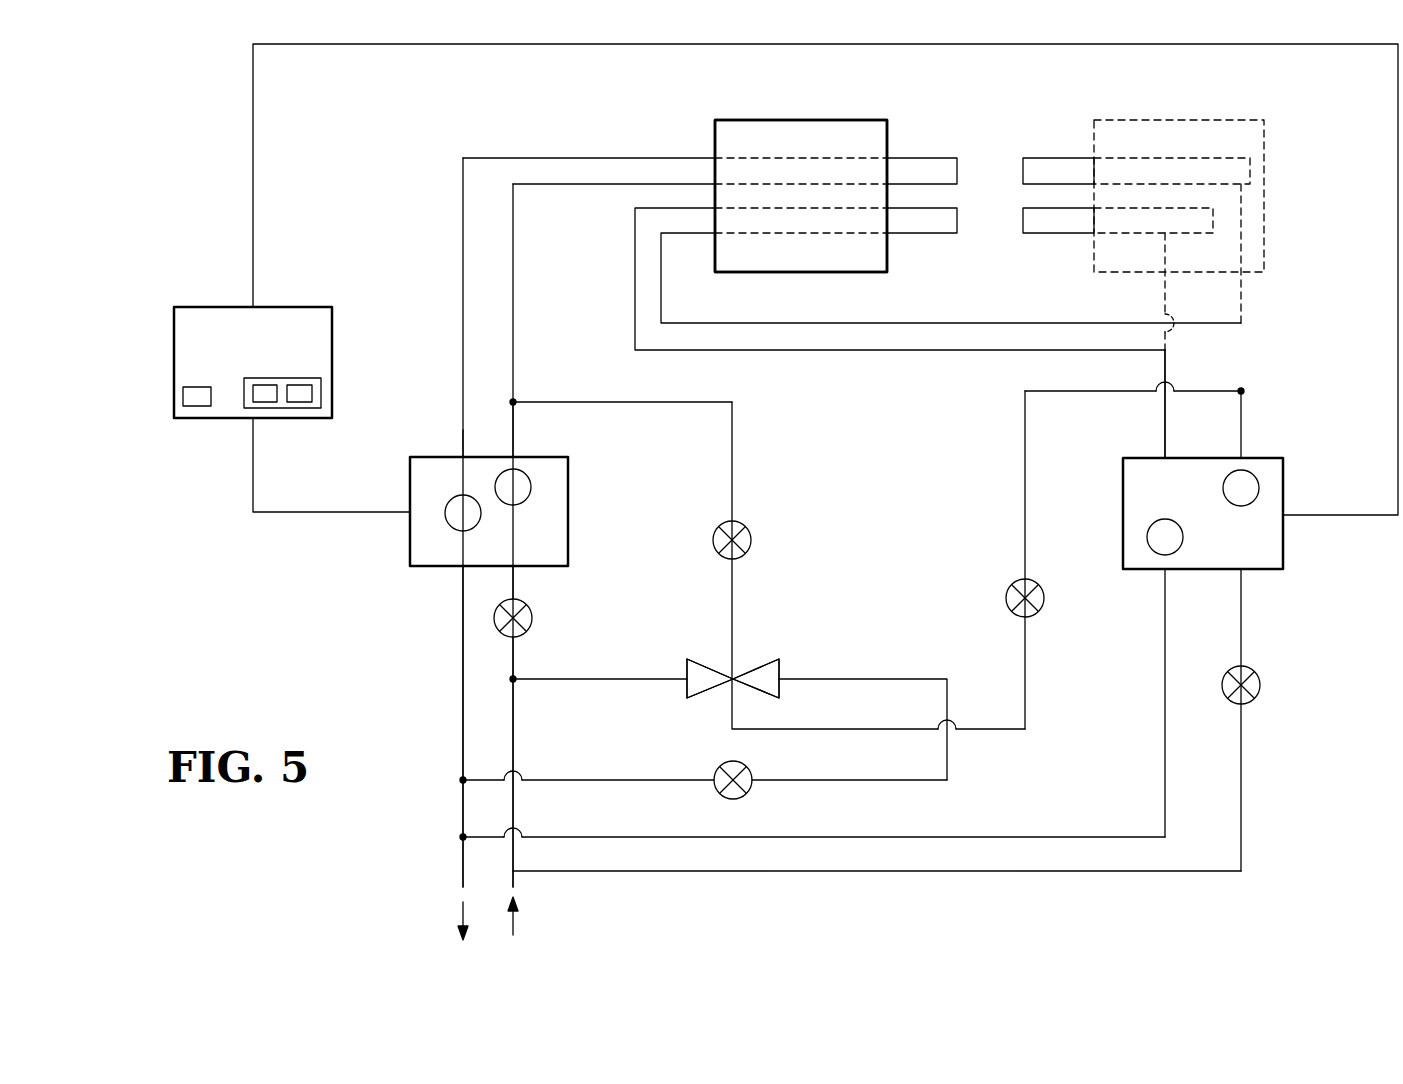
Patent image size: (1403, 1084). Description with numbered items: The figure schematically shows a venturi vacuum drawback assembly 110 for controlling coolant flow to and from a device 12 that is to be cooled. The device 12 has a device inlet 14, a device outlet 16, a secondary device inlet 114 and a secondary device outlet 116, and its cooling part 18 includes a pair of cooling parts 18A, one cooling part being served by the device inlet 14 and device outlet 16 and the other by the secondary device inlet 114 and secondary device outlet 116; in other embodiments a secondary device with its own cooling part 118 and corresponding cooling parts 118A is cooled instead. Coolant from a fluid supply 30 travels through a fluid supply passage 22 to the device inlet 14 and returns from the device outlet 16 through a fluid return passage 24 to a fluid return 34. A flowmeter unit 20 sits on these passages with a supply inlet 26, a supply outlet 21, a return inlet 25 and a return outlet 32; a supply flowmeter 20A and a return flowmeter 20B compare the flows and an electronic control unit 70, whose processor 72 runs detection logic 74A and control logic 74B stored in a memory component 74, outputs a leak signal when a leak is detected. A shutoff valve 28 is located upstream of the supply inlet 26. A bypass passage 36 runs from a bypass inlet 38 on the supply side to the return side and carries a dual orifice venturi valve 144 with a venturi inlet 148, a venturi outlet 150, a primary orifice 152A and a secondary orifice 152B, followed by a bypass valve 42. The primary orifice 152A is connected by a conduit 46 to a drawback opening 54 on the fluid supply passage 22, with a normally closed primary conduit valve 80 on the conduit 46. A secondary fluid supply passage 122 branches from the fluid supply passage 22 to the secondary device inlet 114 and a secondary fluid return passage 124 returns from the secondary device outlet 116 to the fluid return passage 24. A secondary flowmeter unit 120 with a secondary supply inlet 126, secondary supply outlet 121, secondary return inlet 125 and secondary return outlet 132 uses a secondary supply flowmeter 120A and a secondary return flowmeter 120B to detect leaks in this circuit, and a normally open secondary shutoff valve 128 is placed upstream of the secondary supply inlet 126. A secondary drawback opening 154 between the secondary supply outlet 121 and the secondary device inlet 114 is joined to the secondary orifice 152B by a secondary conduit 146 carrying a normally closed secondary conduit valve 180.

The venturi vacuum drawback assembly 110 is at (208, 104).
The electronic control unit 70 is at (174, 325).
The processor 72 is at (183, 394).
The memory component 74 is at (300, 378).
The detection logic 74A is at (253, 396).
The control logic 74B is at (321, 391).
The device 12 is at (722, 112).
The device inlet 14 is at (715, 158).
The device outlet 16 is at (715, 183).
The secondary device outlet 116 is at (715, 208).
The secondary device inlet 114 is at (715, 234).
The cooling part 18 is at (862, 120).
The cooling parts 18A is at (945, 158).
The cooling part 118 is at (1294, 110).
The second heat exchanger ports 118A is at (1062, 158).
The secondary fluid supply passage 122 is at (1250, 332).
The fluid return passage 24 is at (455, 270).
The fluid supply passage 22 is at (522, 295).
The return inlet 25 is at (463, 430).
The supply outlet 21 is at (513, 428).
The drawback opening 54 is at (515, 402).
The conduit 46 is at (732, 437).
The flowmeter unit 20 is at (578, 510).
The supply flowmeter 20A is at (531, 483).
The return flowmeter 20B is at (481, 513).
The supply inlet 26 is at (513, 580).
The shutoff valve 28 is at (532, 615).
The return outlet 32 is at (463, 605).
The bypass inlet 38 is at (515, 679).
The primary conduit valve 80 is at (751, 533).
The dual orifice venturi valve 144 is at (790, 650).
The primary orifice 152A is at (733, 676).
The secondary orifice 152B is at (733, 682).
The venturi inlet 148 is at (687, 680).
The venturi outlet 150 is at (785, 680).
The bypass passage 36 is at (934, 664).
The bypass valve 42 is at (748, 765).
The fluid return 34 is at (807, 897).
The fluid supply 30 is at (871, 919).
The secondary conduit 146 is at (1025, 420).
The secondary drawback opening 154 is at (1243, 391).
The secondary fluid return passage 124 is at (1178, 408).
The secondary return inlet 125 is at (1165, 425).
The secondary supply outlet 121 is at (1243, 436).
The secondary flowmeter unit 120 is at (1283, 465).
The secondary supply flowmeter 120A is at (1259, 488).
The secondary return flowmeter 120B is at (1183, 530).
The secondary conduit valve 180 is at (1044, 590).
The secondary return outlet 132 is at (1165, 657).
The secondary supply inlet 126 is at (1243, 640).
The secondary shutoff valve 128 is at (1259, 690).